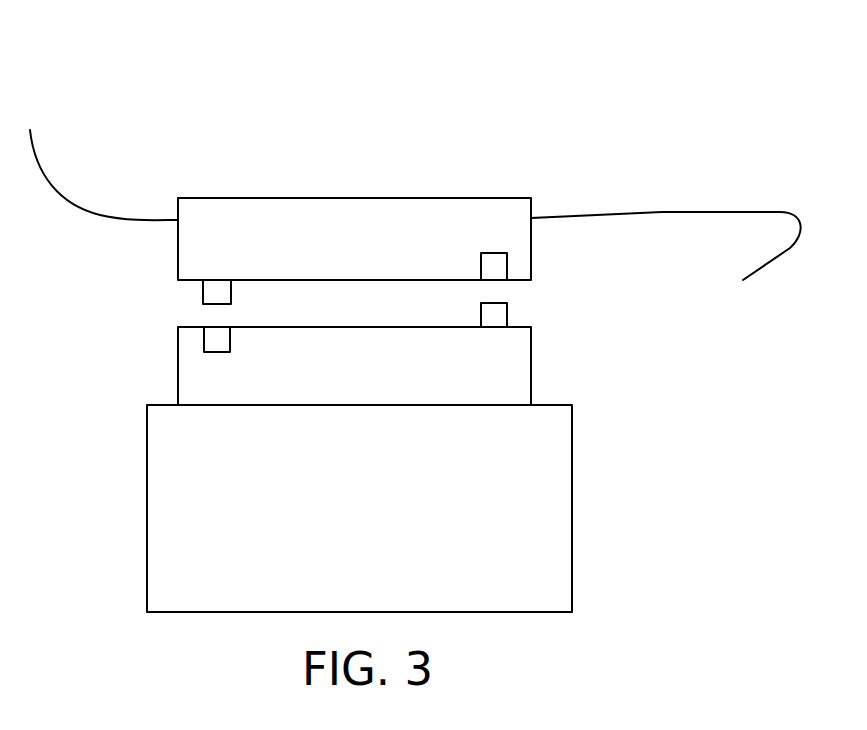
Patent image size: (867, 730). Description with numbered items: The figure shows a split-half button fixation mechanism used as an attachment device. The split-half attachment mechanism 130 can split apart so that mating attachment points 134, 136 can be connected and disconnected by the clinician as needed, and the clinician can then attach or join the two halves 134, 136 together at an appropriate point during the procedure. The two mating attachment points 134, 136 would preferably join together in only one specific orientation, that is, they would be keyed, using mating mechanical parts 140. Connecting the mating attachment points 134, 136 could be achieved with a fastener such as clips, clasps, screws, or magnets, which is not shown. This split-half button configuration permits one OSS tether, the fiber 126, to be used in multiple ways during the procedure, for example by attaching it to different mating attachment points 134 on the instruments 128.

The split-half attachment mechanism 130 is at (163, 114).
The fiber 126 is at (661, 212).
The mating attachment point 134 is at (345, 217).
The mating attachment point 136 is at (533, 363).
The mating mechanical parts 140 is at (507, 312).
The instrument 128 is at (573, 505).